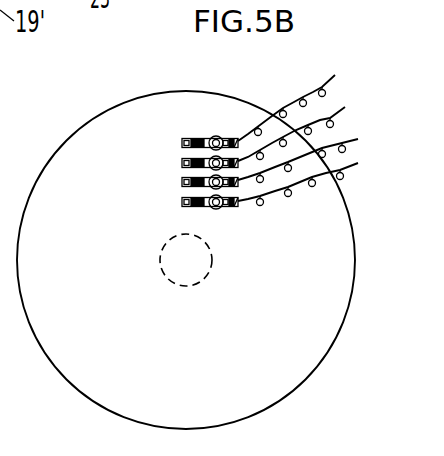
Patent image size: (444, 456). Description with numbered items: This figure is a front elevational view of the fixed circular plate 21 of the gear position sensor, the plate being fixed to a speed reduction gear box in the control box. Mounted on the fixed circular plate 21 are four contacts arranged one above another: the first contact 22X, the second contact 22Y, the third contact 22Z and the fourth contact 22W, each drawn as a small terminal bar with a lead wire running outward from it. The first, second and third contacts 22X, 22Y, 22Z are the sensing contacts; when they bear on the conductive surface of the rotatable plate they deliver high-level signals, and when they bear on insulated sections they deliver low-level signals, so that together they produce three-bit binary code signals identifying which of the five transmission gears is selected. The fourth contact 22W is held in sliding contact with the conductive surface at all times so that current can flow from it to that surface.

The fixed circular plate 21 is at (331, 352).
The first contact 22X is at (237, 141).
The second contact 22Y is at (239, 159).
The third contact 22Z is at (239, 175).
The fourth contact 22W is at (238, 206).